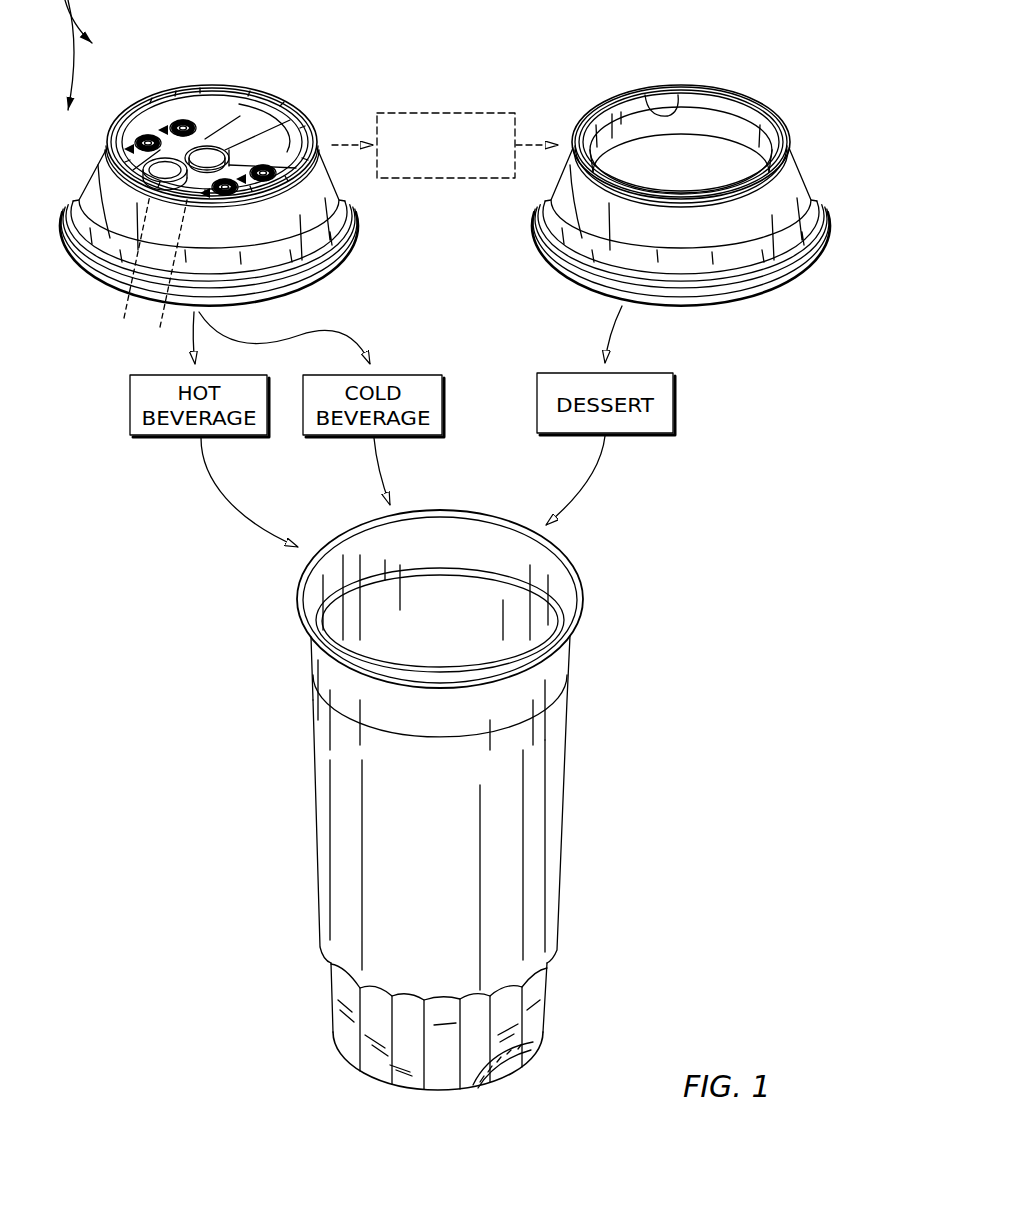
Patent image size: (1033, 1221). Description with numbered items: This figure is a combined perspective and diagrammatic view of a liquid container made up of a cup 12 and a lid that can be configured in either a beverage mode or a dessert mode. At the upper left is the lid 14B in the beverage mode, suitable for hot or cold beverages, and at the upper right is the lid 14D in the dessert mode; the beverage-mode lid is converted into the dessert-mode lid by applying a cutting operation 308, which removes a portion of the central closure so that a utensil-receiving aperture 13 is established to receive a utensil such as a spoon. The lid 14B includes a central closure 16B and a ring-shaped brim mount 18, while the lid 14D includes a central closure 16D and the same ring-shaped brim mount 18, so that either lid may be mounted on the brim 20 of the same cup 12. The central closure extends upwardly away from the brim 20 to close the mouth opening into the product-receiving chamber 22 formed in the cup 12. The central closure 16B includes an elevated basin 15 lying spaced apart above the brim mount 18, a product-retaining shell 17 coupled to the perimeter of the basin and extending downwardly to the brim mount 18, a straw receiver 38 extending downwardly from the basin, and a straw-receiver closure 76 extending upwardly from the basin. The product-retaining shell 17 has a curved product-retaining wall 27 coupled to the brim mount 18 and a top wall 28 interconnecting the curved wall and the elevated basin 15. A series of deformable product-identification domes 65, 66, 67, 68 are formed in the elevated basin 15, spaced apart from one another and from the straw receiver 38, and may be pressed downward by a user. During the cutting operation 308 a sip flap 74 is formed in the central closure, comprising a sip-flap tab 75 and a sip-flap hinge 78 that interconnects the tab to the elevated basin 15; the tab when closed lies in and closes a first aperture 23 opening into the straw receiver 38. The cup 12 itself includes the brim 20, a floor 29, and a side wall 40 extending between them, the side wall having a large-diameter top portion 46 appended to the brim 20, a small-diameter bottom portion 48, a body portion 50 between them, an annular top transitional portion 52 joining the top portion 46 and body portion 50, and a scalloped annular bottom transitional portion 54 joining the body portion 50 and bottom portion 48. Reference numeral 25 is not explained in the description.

The cup 12 is at (607, 634).
The utensil-receiving aperture 13 is at (670, 100).
The lid in beverage mode 14B is at (222, 73).
The lid in dessert mode 14D is at (712, 82).
The elevated basin 15 is at (175, 115).
The central closure 16B is at (316, 118).
The central closure 16D is at (572, 122).
The product-retaining shell 17 is at (828, 100).
The ring-shaped brim mount 18 is at (314, 291).
The brim 20 is at (562, 548).
The product-receiving chamber 22 is at (443, 612).
The first aperture 23 is at (243, 157).
The rim wall 25 is at (312, 145).
The curved product-retaining wall 27 is at (97, 187).
The top wall 28 is at (130, 110).
The floor 29 is at (340, 246).
The straw receiver 38 is at (221, 147).
The side wall 40 is at (565, 848).
The large-diameter top portion 46 is at (299, 644).
The small-diameter bottom portion 48 is at (328, 1037).
The body portion 50 is at (328, 865).
The annular top transitional portion 52 is at (333, 703).
The scalloped annular bottom transitional portion 54 is at (553, 967).
The deformable product-identification dome 65 is at (240, 192).
The deformable product-identification dome 66 is at (282, 172).
The deformable product-identification dome 67 is at (104, 281).
The deformable product-identification dome 68 is at (188, 120).
The sip flap 74 is at (150, 352).
The sip-flap tab 75 is at (130, 266).
The straw-receiver closure 76 is at (167, 178).
The sip-flap hinge 78 is at (168, 273).
The cutting operation 308 is at (430, 113).